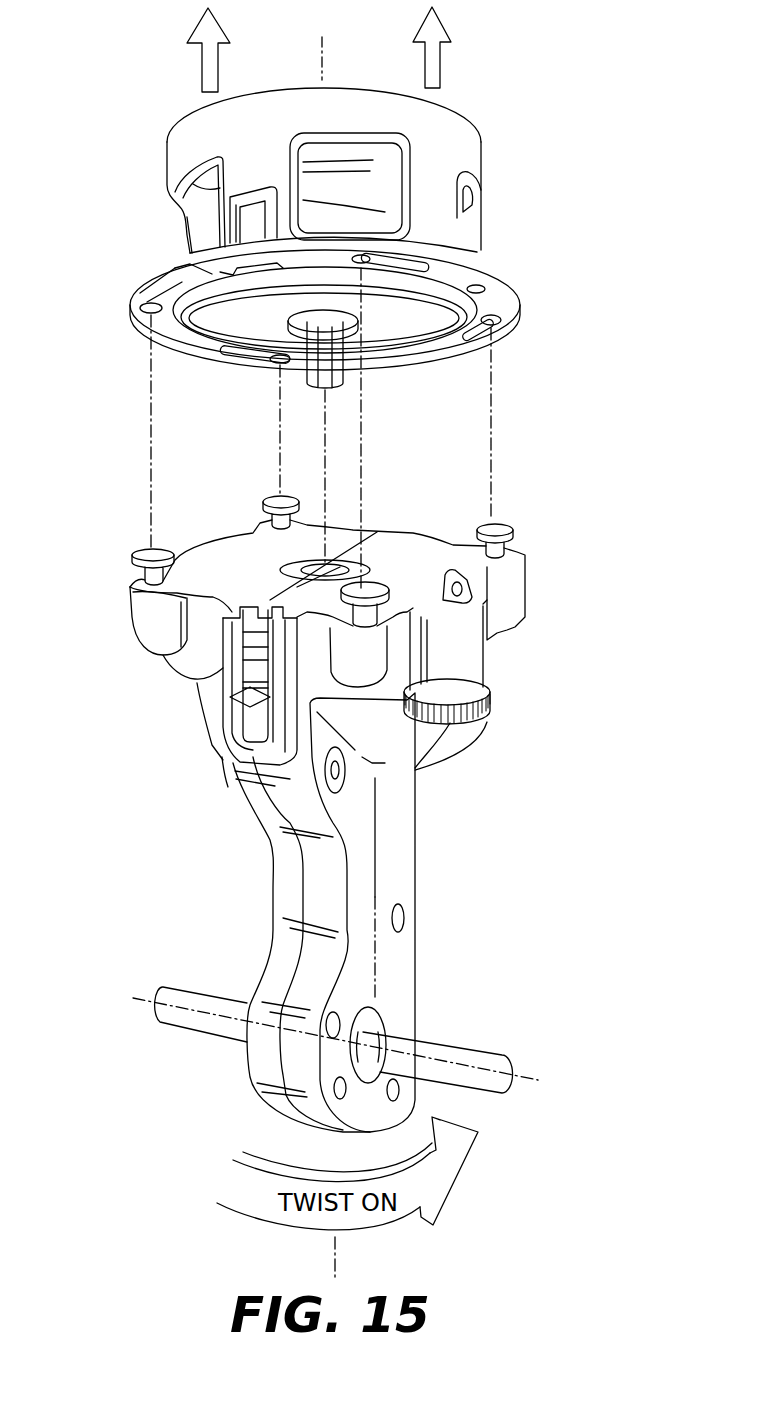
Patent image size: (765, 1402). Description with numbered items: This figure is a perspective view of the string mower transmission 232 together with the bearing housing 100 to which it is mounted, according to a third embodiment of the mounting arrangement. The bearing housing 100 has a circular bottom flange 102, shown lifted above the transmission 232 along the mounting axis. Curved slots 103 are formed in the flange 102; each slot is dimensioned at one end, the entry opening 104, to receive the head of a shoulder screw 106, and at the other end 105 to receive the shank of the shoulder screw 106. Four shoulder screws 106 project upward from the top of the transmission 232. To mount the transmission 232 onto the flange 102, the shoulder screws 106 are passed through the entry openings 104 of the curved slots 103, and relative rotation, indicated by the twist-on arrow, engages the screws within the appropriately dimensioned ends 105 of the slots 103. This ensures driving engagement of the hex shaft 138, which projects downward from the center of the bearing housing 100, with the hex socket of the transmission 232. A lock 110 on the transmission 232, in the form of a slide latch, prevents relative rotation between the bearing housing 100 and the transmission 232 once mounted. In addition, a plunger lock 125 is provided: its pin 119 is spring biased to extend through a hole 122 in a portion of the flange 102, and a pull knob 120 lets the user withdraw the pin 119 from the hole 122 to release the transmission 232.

The bearing housing 100 is at (483, 155).
The circular bottom flange 102 is at (522, 305).
The curved slots 103 is at (150, 284).
The entry openings 104 is at (137, 308).
The shank-receiving end of slot 105 is at (173, 266).
The shoulder screw 106 is at (162, 552).
The lock 110 is at (233, 664).
The pin 119 is at (447, 573).
The pull knob 120 is at (483, 724).
The hole 122 is at (483, 283).
The plunger lock 125 is at (488, 662).
The hex shaft 138 is at (348, 376).
The transmission 232 is at (416, 910).